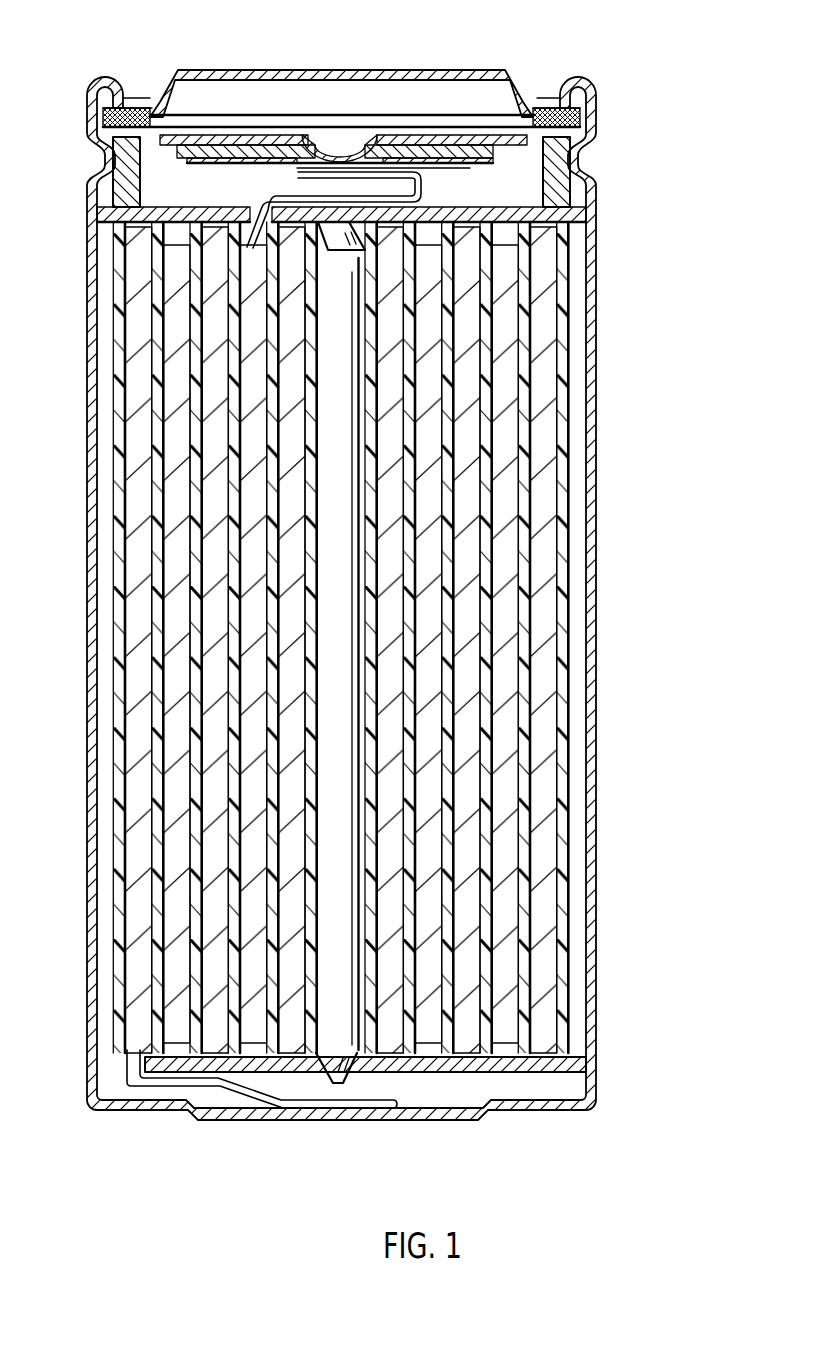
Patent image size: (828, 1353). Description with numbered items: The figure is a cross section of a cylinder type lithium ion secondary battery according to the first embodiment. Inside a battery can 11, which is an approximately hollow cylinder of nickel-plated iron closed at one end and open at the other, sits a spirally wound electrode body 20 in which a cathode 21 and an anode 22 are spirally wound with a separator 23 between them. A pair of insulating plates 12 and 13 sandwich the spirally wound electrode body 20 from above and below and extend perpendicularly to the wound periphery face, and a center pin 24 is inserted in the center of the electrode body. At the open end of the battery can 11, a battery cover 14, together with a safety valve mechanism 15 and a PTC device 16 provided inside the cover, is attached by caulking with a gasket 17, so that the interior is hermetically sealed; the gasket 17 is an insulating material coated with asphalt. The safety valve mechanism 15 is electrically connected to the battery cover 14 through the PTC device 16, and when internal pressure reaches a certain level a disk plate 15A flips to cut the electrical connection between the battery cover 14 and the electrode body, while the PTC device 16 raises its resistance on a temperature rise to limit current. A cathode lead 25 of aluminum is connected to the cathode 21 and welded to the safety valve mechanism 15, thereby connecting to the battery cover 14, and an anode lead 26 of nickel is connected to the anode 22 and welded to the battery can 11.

The battery can 11 is at (597, 277).
The insulating plate 12 is at (586, 216).
The insulating plate 13 is at (588, 1068).
The battery cover 14 is at (313, 70).
The safety valve mechanism 15 is at (462, 134).
The disk plate 15A is at (423, 142).
The PTC device 16 is at (592, 120).
The gasket 17 is at (597, 182).
The spirally wound electrode body 20 is at (385, 637).
The cathode 21 is at (513, 480).
The anode 22 is at (541, 538).
The separator 23 is at (525, 605).
The center pin 24 is at (335, 653).
The cathode lead 25 is at (312, 152).
The anode lead 26 is at (238, 1088).